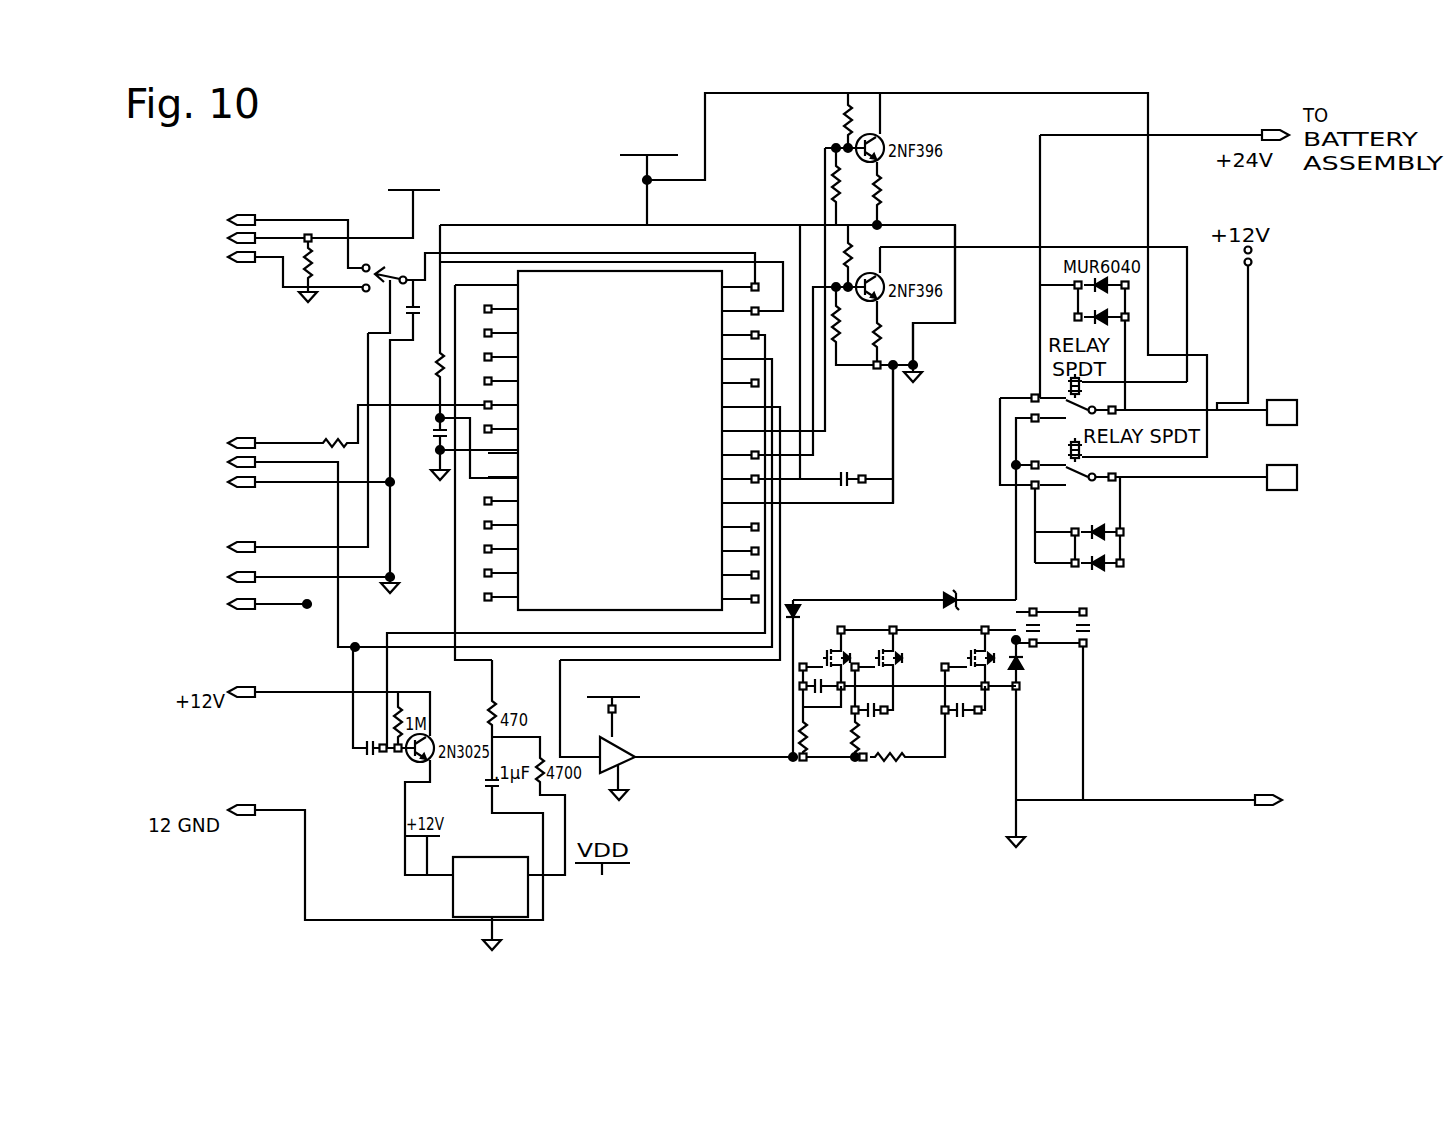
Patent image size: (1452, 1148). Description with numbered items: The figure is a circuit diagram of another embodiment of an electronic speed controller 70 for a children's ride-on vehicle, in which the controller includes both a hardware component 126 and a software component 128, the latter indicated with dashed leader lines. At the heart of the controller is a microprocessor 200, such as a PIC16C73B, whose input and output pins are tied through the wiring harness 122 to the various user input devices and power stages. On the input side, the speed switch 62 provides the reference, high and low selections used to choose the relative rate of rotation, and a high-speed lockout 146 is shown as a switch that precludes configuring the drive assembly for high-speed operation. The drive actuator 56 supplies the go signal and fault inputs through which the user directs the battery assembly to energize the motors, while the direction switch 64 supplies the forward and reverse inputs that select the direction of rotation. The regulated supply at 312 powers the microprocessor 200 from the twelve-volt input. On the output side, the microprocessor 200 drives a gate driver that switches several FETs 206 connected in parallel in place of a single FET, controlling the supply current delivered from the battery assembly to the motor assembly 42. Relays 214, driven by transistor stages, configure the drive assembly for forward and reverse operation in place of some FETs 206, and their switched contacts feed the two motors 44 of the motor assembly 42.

The speed switch 62 is at (322, 204).
The high-speed lockout 146 is at (374, 306).
The controller 70 is at (566, 246).
The wiring harness 122 is at (498, 213).
The microprocessor 200 is at (657, 270).
The drive actuator 56 is at (284, 433).
The direction switch 64 is at (258, 620).
The voltage regulator 312 is at (568, 887).
The relays 214 is at (1068, 448).
The motor assembly 42 is at (1283, 431).
The motor 44 is at (1284, 400).
The software component 128 is at (708, 612).
The hardware component 126 is at (677, 612).
The FET 206 is at (985, 627).